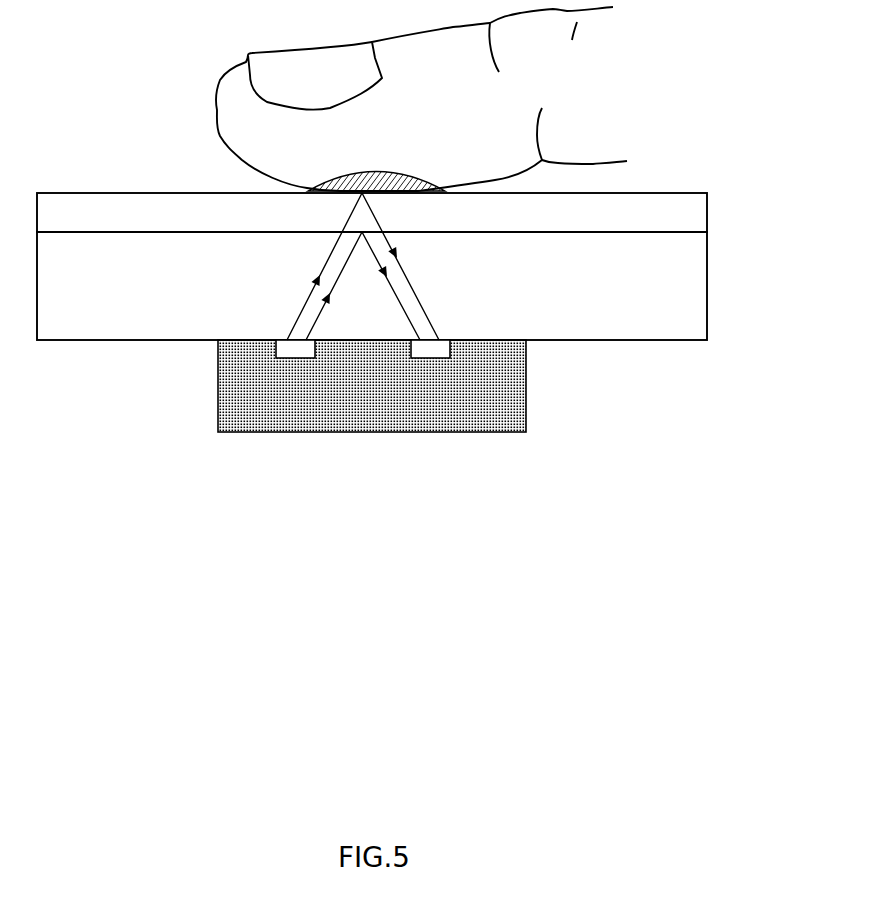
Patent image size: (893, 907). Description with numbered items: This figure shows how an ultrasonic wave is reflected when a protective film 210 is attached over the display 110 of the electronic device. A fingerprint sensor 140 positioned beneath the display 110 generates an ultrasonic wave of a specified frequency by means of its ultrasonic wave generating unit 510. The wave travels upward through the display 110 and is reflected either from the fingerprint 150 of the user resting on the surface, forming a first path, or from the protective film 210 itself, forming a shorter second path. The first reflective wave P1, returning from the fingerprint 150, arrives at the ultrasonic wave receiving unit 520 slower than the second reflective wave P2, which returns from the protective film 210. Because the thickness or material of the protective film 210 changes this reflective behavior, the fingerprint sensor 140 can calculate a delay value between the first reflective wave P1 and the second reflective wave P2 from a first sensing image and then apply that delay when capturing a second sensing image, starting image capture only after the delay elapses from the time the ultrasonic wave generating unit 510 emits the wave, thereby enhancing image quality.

The display 110 is at (707, 285).
The protective film 210 is at (707, 212).
The fingerprint 150 is at (362, 191).
The fingerprint sensor 140 is at (372, 432).
The ultrasonic wave generating unit 510 is at (295, 358).
The ultrasonic wave receiving unit 520 is at (429, 358).
The first reflective wave P1 is at (312, 288).
The second reflective wave P2 is at (397, 293).